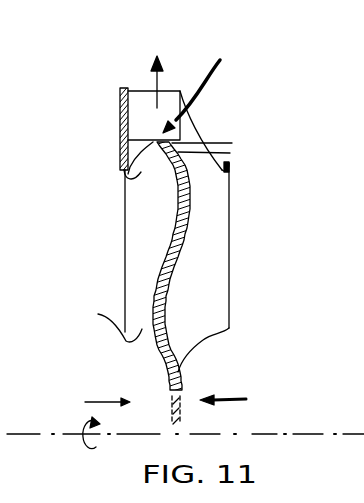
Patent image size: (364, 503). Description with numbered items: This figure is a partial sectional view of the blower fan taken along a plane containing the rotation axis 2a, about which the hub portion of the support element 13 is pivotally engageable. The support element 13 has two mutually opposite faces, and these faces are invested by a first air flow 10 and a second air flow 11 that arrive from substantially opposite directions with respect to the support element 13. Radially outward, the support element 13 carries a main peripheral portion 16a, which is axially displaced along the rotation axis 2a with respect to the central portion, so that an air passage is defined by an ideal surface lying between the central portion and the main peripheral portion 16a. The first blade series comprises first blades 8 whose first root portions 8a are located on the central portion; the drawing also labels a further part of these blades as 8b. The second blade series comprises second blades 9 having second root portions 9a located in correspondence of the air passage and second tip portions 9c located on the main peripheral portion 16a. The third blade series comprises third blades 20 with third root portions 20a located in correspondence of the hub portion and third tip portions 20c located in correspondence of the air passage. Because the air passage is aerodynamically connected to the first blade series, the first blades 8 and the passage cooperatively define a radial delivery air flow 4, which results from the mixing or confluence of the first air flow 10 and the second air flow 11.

The rotation axis 2a is at (267, 433).
The radial delivery air flow 4 is at (151, 89).
The first blades 8 is at (210, 198).
The first root portions 8a is at (206, 340).
The upper edge of impeller hub 8b is at (229, 164).
The second blades 9 is at (197, 86).
The second root portions 9a is at (230, 153).
The second tip portions 9c is at (178, 90).
The first air flow 10 is at (100, 400).
The second air flow 11 is at (245, 397).
The support element 13 is at (190, 240).
The main peripheral portion 16a is at (123, 89).
The third blades 20 is at (136, 206).
The third root portions 20a is at (97, 318).
The third tip portions 20c is at (118, 180).